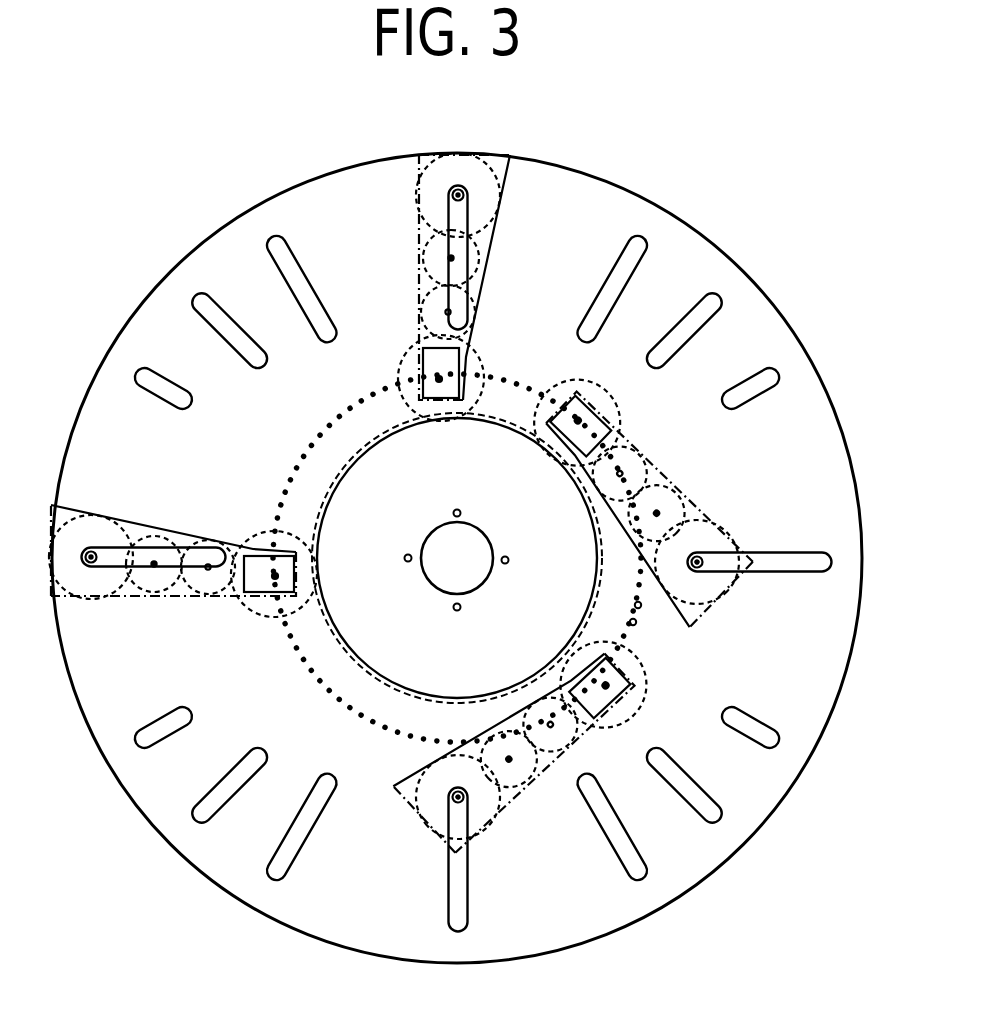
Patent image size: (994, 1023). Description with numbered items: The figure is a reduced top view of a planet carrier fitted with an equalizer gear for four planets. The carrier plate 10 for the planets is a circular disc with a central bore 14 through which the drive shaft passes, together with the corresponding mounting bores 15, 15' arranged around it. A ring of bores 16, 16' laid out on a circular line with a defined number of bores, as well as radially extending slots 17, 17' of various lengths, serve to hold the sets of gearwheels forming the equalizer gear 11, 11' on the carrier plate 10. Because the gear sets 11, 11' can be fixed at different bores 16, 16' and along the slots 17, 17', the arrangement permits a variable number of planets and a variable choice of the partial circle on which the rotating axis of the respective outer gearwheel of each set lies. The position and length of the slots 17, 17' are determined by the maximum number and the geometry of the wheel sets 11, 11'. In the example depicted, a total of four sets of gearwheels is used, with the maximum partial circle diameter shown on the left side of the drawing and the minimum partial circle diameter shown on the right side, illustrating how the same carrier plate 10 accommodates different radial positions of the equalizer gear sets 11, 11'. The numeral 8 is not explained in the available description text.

The carrier plate 10 is at (595, 202).
The central hub ring 8 is at (332, 458).
The central bore 14 is at (434, 531).
The mounting bore 15 is at (480, 624).
The mounting bore 15' is at (534, 575).
The equalizer gear 11 is at (528, 748).
The equalizer gear 11' is at (664, 495).
The bore 16 is at (667, 642).
The bore 16' is at (708, 628).
The radially extending slot 17 is at (481, 894).
The radially extending slot 17' is at (659, 859).